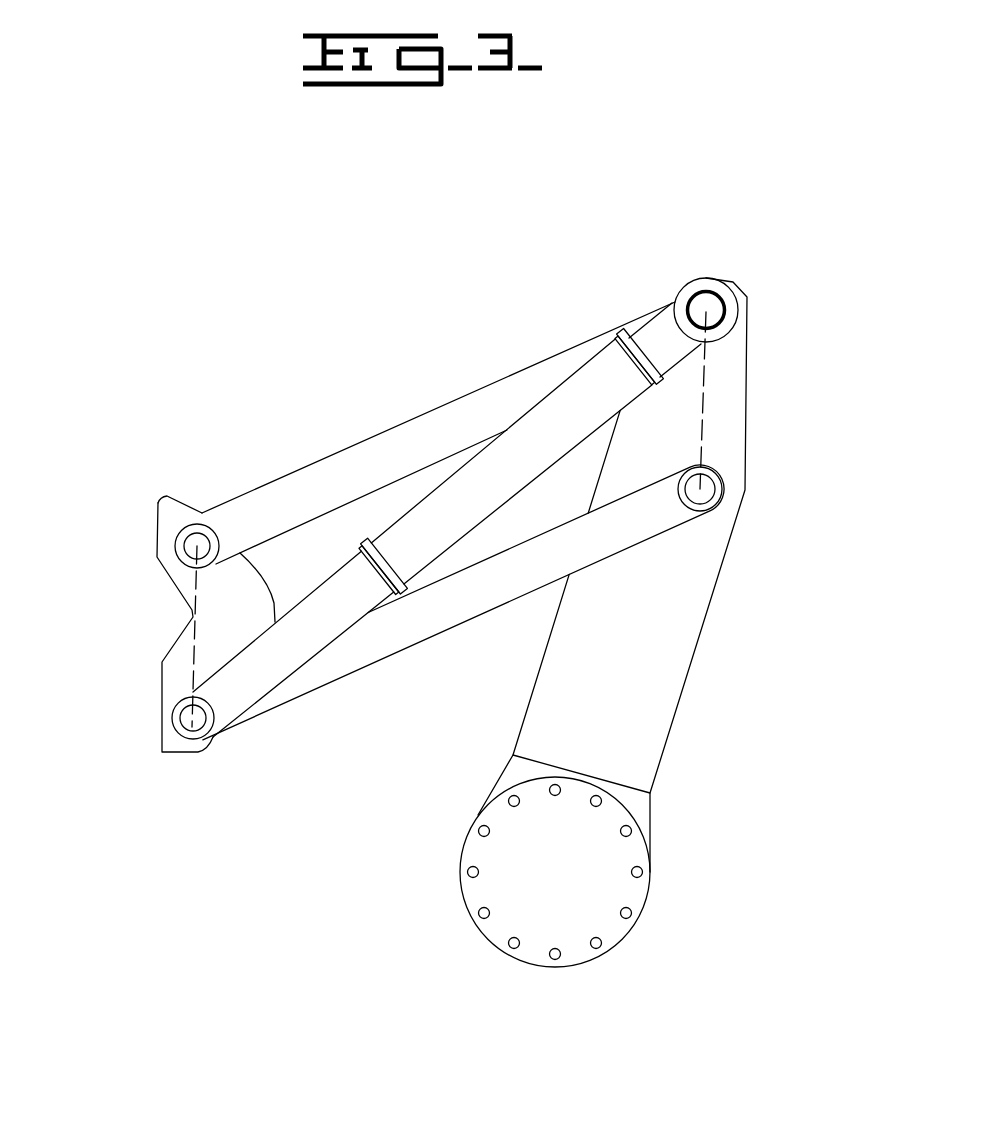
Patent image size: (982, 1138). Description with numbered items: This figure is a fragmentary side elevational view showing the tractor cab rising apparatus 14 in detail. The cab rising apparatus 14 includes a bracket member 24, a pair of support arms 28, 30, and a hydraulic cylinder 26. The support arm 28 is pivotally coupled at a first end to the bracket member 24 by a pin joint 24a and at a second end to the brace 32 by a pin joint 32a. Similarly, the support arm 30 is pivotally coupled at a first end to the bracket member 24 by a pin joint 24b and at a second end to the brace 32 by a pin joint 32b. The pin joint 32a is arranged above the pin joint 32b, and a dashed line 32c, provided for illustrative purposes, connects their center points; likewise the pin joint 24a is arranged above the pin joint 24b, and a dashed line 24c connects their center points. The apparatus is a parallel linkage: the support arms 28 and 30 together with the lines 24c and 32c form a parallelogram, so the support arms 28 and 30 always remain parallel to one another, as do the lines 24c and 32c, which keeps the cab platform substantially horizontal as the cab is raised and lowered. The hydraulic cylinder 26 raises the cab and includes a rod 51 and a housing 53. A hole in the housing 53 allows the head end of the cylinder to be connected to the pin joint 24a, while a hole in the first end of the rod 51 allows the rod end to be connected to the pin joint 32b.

The cab rising apparatus 14 is at (247, 383).
The bracket member 24 is at (560, 695).
The pin joint 24a is at (710, 312).
The pin joint 24b is at (706, 491).
The dashed line 24c is at (700, 401).
The hydraulic cylinder 26 is at (493, 473).
The support arm 28 is at (320, 468).
The support arm 30 is at (396, 636).
The brace 32 is at (172, 510).
The pin joint 32a is at (195, 545).
The pin joint 32b is at (188, 726).
The dashed line 32c is at (194, 630).
The rod 51 is at (247, 673).
The housing 53 is at (600, 372).